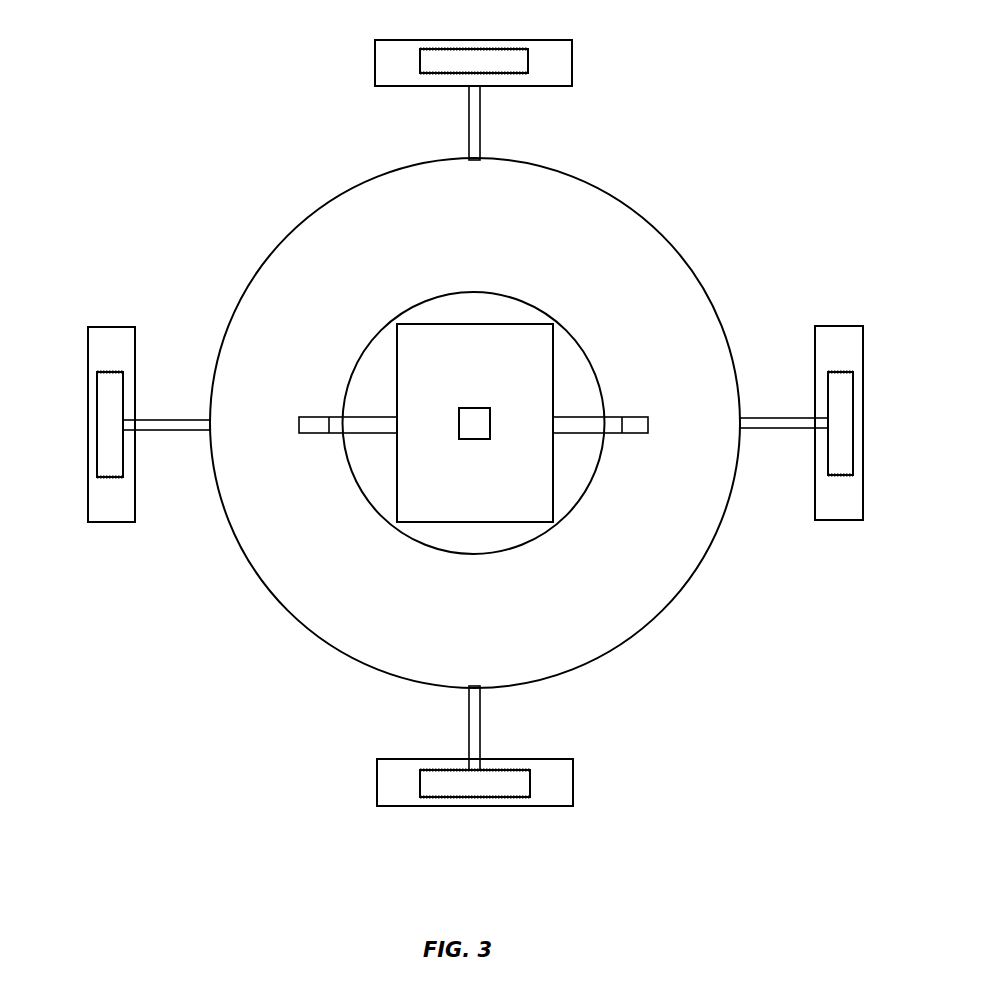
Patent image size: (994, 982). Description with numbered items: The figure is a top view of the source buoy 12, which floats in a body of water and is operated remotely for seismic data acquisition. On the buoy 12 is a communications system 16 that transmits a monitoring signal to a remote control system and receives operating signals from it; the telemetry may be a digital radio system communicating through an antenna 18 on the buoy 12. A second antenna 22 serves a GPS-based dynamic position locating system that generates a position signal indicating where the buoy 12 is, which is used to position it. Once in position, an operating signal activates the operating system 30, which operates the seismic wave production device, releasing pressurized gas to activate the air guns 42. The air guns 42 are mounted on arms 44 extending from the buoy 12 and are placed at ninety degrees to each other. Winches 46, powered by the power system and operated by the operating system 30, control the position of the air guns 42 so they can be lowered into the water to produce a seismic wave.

The buoy 12 is at (720, 90).
The communications system 16 is at (580, 289).
The antenna 18 is at (620, 417).
The antenna 22 is at (315, 416).
The operating system 30 is at (369, 289).
The air guns 42 is at (558, 37).
The arms 44 is at (482, 128).
The winches 46 is at (475, 42).